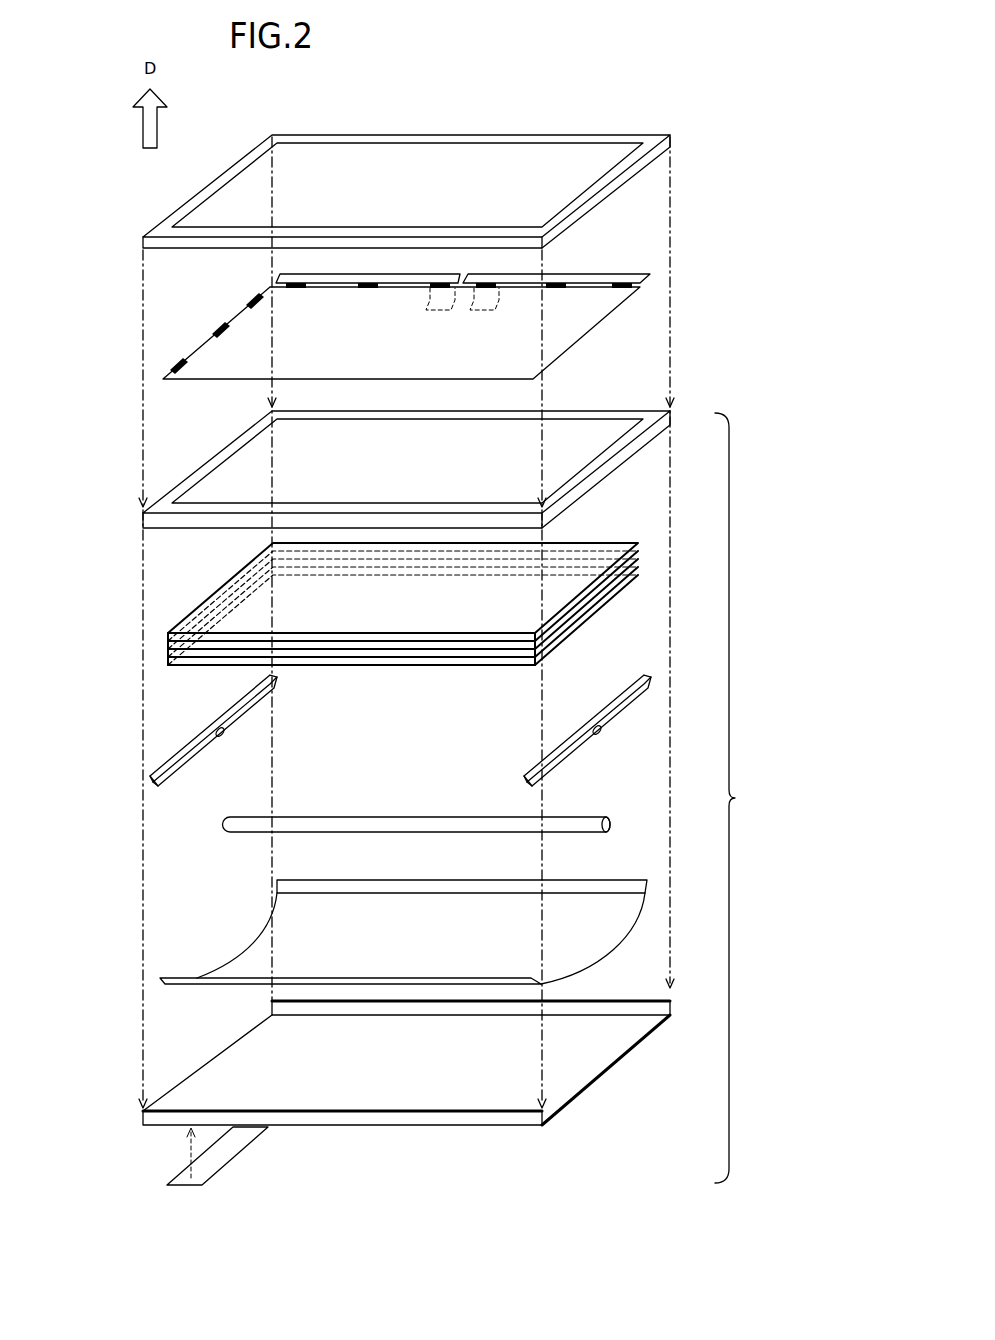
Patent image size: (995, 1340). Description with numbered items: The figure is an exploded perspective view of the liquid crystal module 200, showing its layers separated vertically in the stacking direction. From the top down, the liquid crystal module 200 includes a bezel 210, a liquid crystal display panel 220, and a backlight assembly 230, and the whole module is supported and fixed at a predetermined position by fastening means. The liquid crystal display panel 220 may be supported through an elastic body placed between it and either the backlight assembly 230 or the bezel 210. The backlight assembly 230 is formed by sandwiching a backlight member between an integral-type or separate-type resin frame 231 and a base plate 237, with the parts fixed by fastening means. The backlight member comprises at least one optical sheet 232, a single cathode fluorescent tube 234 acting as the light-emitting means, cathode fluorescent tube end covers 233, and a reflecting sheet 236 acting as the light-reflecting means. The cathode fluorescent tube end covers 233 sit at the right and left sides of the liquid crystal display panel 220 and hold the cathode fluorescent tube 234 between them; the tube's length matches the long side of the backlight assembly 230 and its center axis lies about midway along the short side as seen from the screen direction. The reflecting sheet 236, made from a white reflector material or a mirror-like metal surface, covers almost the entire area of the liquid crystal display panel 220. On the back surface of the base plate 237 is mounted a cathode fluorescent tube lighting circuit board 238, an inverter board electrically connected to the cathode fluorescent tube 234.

The liquid crystal module 200 is at (435, 110).
The bezel 210 is at (618, 182).
The liquid crystal display panel 220 is at (565, 320).
The backlight assembly 230 is at (416, 798).
The resin frame 231 is at (214, 463).
The optical sheet 232 is at (160, 652).
The cathode fluorescent tube end covers 233 is at (193, 738).
The cathode fluorescent tube 234 is at (253, 822).
The reflecting sheet 236 is at (272, 953).
The base plate 237 is at (575, 1060).
The cathode fluorescent tube lighting circuit board 238 is at (183, 1178).